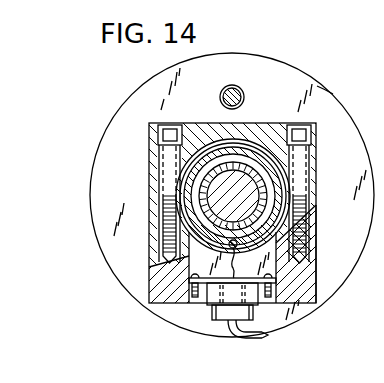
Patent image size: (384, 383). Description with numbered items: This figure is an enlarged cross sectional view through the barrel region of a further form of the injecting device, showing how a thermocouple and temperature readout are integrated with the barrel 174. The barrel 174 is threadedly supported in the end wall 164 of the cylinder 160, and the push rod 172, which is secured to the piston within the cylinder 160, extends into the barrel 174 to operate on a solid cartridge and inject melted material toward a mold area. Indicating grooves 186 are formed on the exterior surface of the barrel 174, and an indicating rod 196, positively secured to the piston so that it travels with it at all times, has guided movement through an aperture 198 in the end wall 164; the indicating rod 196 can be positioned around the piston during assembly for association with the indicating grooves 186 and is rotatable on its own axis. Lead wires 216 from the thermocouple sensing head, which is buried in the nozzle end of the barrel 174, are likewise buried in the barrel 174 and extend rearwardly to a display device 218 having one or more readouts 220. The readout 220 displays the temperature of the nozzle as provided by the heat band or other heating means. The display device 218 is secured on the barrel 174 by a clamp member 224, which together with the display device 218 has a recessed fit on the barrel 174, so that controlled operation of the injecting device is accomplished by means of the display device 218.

The cylinder 160 is at (121, 104).
The end wall 164 is at (325, 89).
The push rod 172 is at (213, 190).
The barrel 174 is at (278, 206).
The indicating grooves 186 is at (201, 129).
The indicating rod 196 is at (244, 93).
The aperture 198 is at (222, 86).
The lead wires 216 is at (153, 262).
The display device 218 is at (318, 243).
The readout 220 is at (200, 298).
The clamp member 224 is at (320, 158).